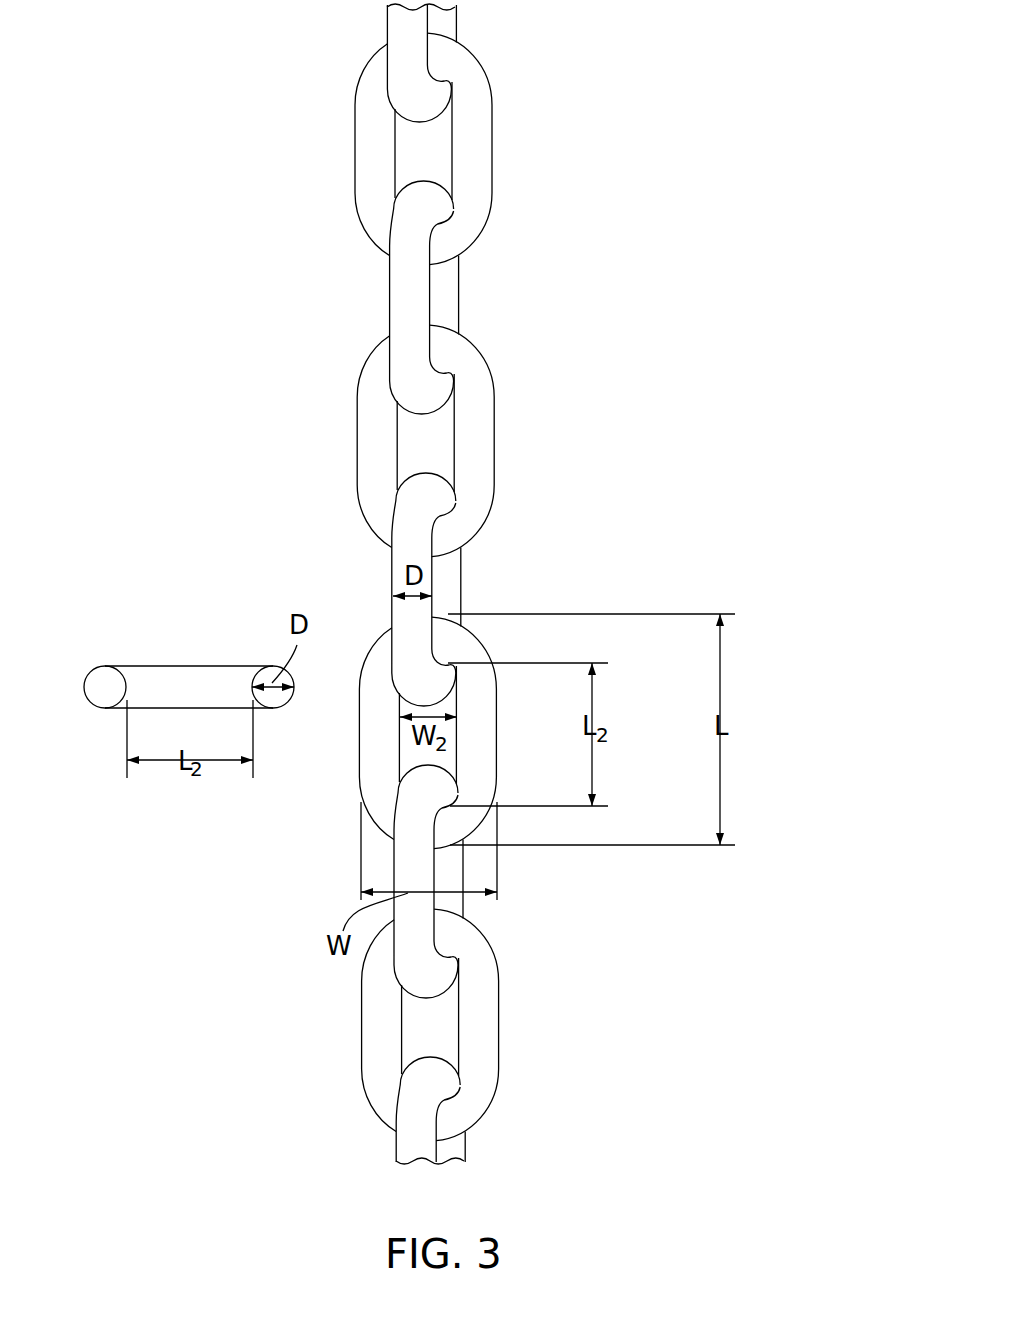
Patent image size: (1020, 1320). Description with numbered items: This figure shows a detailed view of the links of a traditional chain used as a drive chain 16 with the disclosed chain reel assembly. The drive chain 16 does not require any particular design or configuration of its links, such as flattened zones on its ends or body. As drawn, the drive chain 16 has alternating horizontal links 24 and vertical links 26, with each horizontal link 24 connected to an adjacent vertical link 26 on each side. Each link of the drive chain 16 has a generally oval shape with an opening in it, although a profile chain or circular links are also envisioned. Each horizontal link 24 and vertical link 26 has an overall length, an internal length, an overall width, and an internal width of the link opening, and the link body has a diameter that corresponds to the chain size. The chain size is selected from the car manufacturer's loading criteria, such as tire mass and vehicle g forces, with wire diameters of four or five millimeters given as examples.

The drive chain 16 is at (603, 205).
The horizontal link 24 is at (482, 120).
The vertical link 26 is at (451, 292).